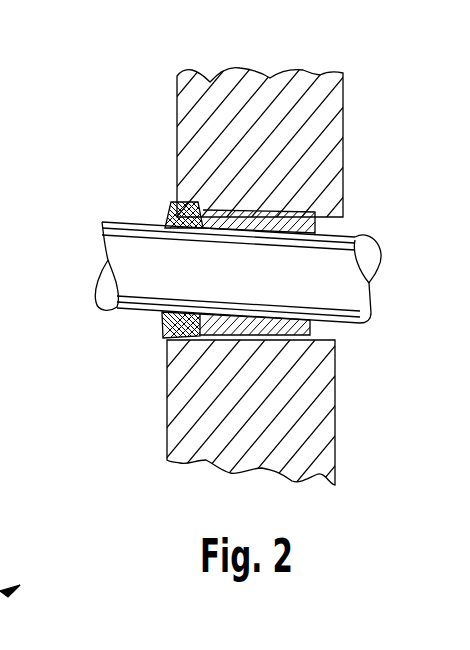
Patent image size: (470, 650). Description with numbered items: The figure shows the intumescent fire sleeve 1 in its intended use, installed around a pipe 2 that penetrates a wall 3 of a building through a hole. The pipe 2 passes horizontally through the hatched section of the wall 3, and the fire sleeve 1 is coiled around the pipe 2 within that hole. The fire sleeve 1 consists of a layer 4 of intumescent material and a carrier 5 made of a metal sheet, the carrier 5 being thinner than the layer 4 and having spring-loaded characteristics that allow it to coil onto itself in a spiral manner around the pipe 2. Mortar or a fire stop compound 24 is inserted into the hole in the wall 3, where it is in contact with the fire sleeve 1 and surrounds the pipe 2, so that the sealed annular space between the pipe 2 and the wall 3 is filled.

The intumescent fire sleeve 1 is at (343, 223).
The pipe 2 is at (354, 289).
The wall 3 is at (313, 120).
The layer of intumescent material 4 is at (275, 338).
The carrier 5 is at (243, 338).
The mortar or fire stop compound 24 is at (170, 218).